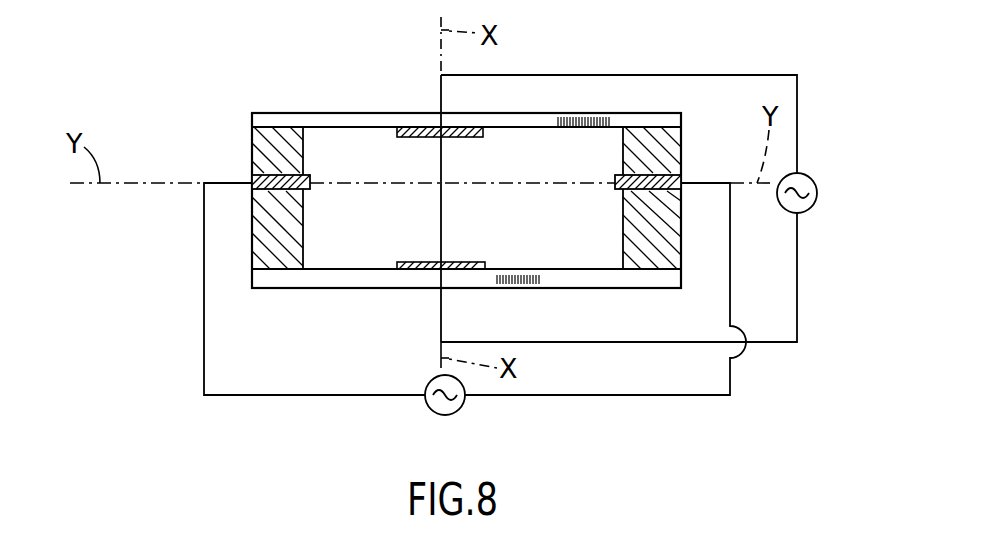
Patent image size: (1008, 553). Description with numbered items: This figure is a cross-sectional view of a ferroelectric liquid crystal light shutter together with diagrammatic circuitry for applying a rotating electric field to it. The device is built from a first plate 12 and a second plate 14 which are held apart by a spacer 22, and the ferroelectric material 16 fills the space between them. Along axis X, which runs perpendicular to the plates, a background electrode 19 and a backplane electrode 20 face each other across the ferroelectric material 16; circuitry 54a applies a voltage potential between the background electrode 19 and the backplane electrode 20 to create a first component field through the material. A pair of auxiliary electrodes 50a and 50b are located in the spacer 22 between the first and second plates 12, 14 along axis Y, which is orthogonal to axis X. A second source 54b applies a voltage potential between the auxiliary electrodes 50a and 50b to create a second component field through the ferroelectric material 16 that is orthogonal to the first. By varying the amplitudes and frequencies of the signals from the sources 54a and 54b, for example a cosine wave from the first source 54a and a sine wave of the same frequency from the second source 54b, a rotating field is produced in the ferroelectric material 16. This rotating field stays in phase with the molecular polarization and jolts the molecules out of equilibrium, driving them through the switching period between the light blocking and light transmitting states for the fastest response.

The first plate 12 is at (263, 289).
The second plate 14 is at (252, 113).
The ferroelectric material 16 is at (480, 220).
The background electrode 19 is at (463, 262).
The backplane electrode 20 is at (411, 126).
The spacer 22 is at (252, 150).
The auxiliary electrode 50a is at (252, 177).
The auxiliary electrode 50b is at (615, 184).
The circuitry 54a is at (818, 195).
The second source 54b is at (459, 409).